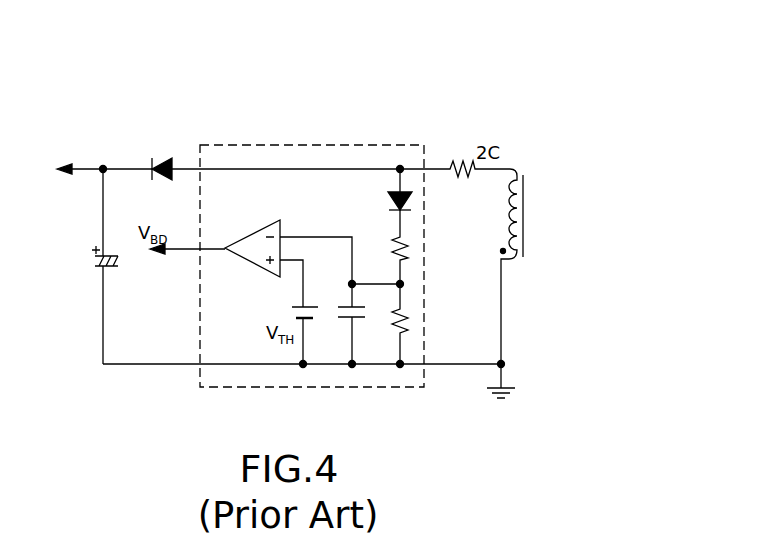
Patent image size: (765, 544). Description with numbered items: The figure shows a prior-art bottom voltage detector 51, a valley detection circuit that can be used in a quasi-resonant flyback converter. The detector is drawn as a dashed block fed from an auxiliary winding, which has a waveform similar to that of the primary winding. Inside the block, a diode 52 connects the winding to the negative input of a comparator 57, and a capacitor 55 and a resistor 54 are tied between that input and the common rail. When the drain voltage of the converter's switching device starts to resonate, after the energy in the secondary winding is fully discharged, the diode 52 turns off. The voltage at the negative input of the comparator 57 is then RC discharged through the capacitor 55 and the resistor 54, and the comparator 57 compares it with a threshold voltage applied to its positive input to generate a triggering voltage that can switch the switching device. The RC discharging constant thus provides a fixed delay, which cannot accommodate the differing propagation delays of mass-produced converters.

The bottom voltage detector 51 is at (312, 145).
The diode 52 is at (390, 203).
The resistor 54 is at (410, 322).
The capacitor 55 is at (342, 313).
The comparator 57 is at (253, 238).